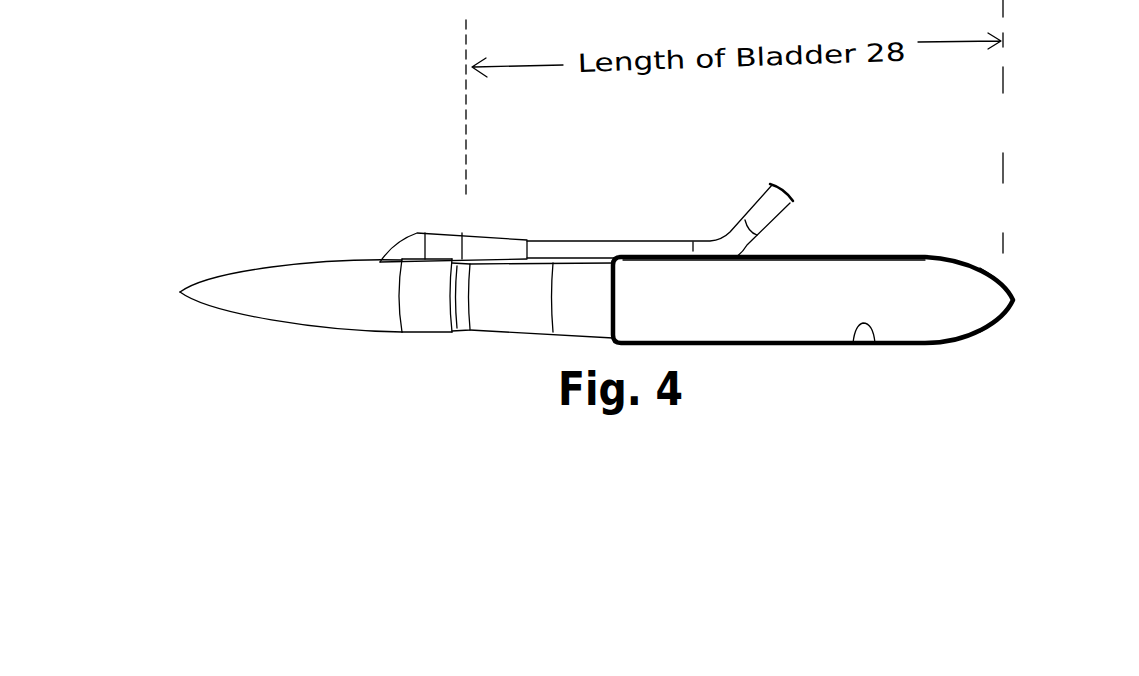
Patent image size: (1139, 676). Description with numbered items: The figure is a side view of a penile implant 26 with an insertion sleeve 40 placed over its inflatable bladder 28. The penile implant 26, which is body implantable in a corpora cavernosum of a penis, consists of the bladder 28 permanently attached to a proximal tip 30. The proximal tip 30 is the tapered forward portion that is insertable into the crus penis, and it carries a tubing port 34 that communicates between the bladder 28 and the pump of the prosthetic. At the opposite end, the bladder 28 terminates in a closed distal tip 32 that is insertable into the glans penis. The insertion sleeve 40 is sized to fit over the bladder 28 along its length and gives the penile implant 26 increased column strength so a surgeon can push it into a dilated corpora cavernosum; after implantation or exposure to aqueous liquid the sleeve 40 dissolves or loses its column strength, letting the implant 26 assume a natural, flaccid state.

The penile implant 26 is at (604, 191).
The bladder 28 is at (861, 344).
The proximal tip 30 is at (263, 268).
The closed distal tip 32 is at (1013, 300).
The tubing port 34 is at (437, 240).
The insertion sleeve 40 is at (903, 258).